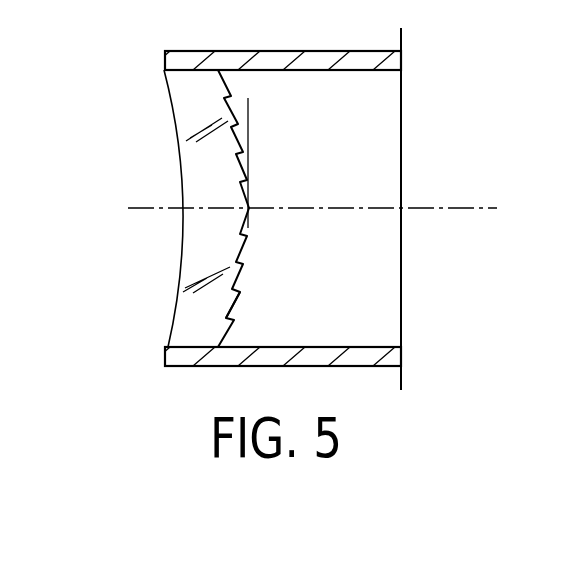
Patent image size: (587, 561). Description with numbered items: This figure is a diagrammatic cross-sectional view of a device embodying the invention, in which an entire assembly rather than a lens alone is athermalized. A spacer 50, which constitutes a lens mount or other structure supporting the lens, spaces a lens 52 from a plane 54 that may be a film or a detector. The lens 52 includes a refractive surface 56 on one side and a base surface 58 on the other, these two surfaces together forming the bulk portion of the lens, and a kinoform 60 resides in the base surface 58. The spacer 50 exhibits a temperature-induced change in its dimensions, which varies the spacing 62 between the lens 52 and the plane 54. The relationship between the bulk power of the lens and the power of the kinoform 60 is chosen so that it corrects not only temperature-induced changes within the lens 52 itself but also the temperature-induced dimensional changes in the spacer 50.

The spacer 50 is at (288, 52).
The lens 52 is at (191, 236).
The plane 54 is at (402, 177).
The refractive surface 56 is at (181, 253).
The base surface 58 is at (231, 309).
The kinoform 60 is at (247, 252).
The spacing 62 is at (401, 135).